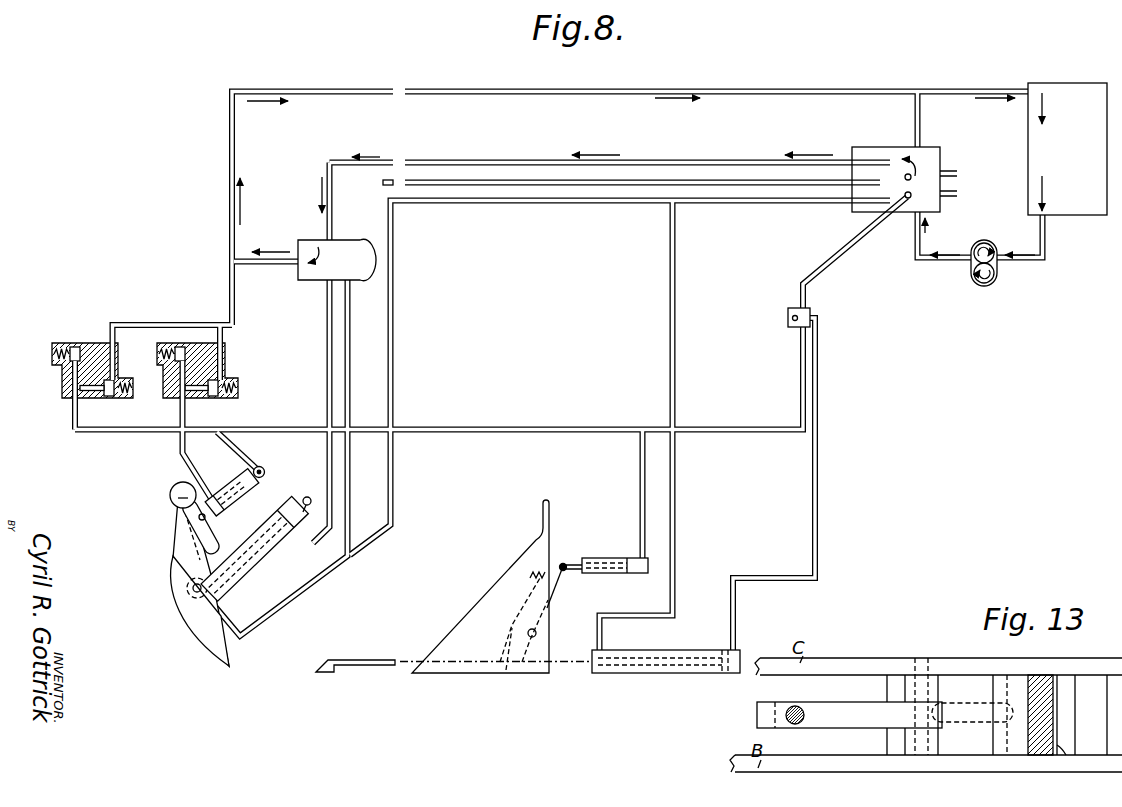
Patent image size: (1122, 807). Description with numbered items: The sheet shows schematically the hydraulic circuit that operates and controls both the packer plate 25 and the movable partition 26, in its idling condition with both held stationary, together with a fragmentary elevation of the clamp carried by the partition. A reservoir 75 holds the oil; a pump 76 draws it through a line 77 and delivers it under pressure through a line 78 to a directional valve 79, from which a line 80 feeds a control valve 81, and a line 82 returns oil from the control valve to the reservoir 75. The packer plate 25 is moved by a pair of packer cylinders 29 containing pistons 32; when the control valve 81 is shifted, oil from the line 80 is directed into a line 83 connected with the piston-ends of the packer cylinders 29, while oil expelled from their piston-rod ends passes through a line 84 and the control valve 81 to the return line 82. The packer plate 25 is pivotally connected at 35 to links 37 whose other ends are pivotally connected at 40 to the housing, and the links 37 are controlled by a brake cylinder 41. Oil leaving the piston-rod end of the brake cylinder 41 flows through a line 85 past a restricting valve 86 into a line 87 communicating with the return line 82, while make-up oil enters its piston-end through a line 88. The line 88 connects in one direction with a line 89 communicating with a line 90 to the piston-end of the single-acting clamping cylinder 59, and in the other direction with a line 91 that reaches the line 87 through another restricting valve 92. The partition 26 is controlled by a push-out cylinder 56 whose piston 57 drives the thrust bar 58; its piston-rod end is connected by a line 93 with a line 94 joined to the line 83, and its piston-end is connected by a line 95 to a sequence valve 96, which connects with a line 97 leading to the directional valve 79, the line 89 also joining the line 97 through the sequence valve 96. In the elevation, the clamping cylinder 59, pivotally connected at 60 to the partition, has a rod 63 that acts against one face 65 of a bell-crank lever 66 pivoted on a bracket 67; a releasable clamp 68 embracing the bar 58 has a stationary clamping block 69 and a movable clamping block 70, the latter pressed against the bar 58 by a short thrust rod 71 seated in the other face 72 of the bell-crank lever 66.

In FIG. 8, the packer plate 25 is at (177, 585).
In FIG. 8, the partition 26 is at (485, 611).
In FIG. 8, the hydraulic cylinders 29 is at (240, 578).
In FIG. 8, the pistons 32 is at (175, 552).
In FIG. 8, the pivotal connection 35 is at (172, 492).
In FIG. 8, the links 37 is at (214, 528).
In FIG. 8, the pivotal connection 40 is at (266, 478).
In FIG. 8, the hydraulic cylinder 41 is at (245, 496).
In FIG. 8, the hydraulic cylinder 56 is at (688, 653).
In FIG. 8, the piston 57 is at (722, 675).
In FIG. 8, the thrust bar 58 is at (338, 660).
In FIG. 13, the thrust bar 58 is at (1043, 694).
In FIG. 8, the hydraulic cylinder 59 is at (637, 575).
In FIG. 8, the pivotal connection 60 is at (621, 576).
In FIG. 13, the rod 63 is at (805, 715).
In FIG. 13, the face 65 is at (864, 720).
In FIG. 13, the bell-crank lever 66 is at (766, 717).
In FIG. 13, the bracket 67 is at (893, 683).
In FIG. 8, the releasable clamp 68 is at (510, 672).
In FIG. 13, the releasable clamp 68 is at (1076, 723).
In FIG. 13, the stationary clamping block 69 is at (1058, 749).
In FIG. 13, the movable clamping block 70 is at (1014, 690).
In FIG. 13, the thrust rod 71 is at (978, 720).
In FIG. 13, the face 72 is at (972, 715).
In FIG. 8, the reservoir 75 is at (1068, 90).
In FIG. 8, the pump 76 is at (975, 283).
In FIG. 8, the line 77 is at (1047, 240).
In FIG. 8, the line 78 is at (916, 246).
In FIG. 8, the directional valve 79 is at (882, 147).
In FIG. 8, the line 80 is at (665, 158).
In FIG. 8, the control valve 81 is at (310, 240).
In FIG. 8, the line 82 is at (228, 165).
In FIG. 8, the line 83 is at (349, 374).
In FIG. 8, the conduit 84 is at (327, 360).
In FIG. 8, the line 85 is at (178, 448).
In FIG. 8, the restricting valve 86 is at (224, 360).
In FIG. 8, the line 87 is at (178, 323).
In FIG. 8, the line 88 is at (240, 437).
In FIG. 8, the line 89 is at (505, 427).
In FIG. 8, the line 90 is at (640, 486).
In FIG. 8, the line 91 is at (128, 427).
In FIG. 8, the restricting valve 92 is at (52, 380).
In FIG. 8, the line 93 is at (670, 313).
In FIG. 8, the line 94 is at (510, 204).
In FIG. 8, the line 95 is at (818, 530).
In FIG. 8, the sequence valve 96 is at (788, 324).
In FIG. 8, the line 97 is at (850, 244).